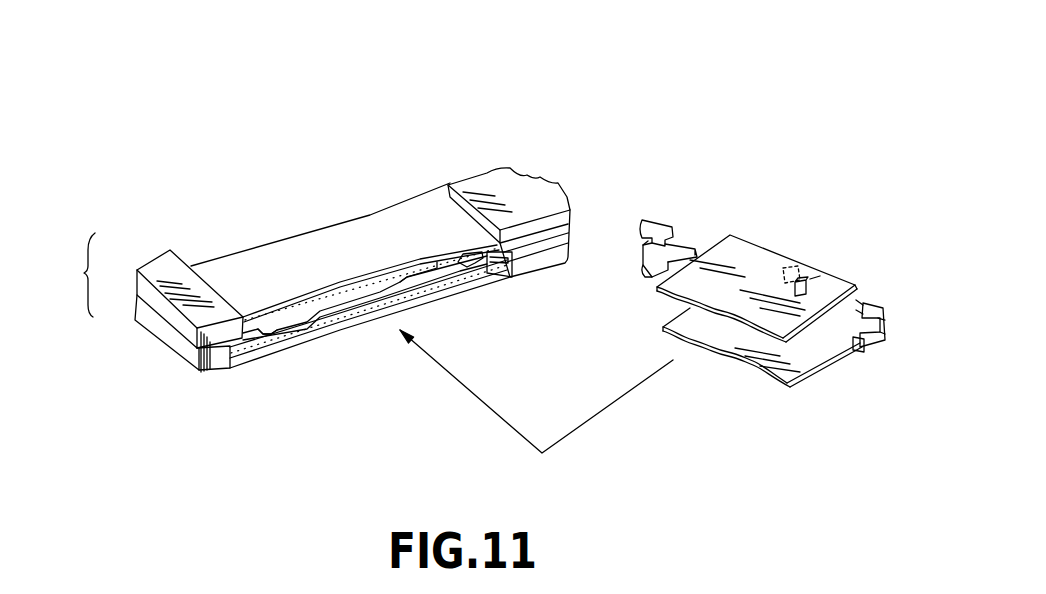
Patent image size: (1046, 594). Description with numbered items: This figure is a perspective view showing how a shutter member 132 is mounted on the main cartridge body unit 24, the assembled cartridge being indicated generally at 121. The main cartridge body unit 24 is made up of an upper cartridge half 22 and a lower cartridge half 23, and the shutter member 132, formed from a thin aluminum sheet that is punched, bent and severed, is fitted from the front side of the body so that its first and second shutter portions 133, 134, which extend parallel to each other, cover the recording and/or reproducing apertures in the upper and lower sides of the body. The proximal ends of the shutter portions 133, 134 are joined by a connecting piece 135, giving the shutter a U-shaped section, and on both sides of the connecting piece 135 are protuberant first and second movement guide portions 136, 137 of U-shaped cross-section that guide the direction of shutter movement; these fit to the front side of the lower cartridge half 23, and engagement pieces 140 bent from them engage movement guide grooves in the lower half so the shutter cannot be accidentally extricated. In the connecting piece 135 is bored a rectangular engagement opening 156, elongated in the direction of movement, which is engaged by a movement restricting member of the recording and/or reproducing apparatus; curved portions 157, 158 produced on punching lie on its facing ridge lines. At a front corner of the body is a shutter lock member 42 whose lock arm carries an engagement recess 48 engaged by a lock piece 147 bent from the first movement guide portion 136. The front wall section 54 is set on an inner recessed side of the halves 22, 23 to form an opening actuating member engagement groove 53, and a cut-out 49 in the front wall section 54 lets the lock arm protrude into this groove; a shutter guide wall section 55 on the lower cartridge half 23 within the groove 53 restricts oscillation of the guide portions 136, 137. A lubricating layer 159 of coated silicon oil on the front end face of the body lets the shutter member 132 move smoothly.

The shutter assembly 121 is at (635, 117).
The main cartridge body unit 24 is at (80, 280).
The upper cartridge half 22 is at (153, 264).
The lower cartridge half 23 is at (142, 303).
The lubricating layer 159 is at (293, 303).
The cut-out 49 is at (436, 262).
The opening actuating member engagement groove 53 is at (533, 247).
The engagement recess 48 is at (467, 263).
The shutter lock member 42 is at (490, 263).
The front wall section 54 is at (350, 311).
The shutter guide wall section 55 is at (283, 318).
The shutter member 132 is at (754, 253).
The first shutter portion 133 is at (682, 287).
The second shutter portion 134 is at (793, 370).
The hook 147 is at (652, 227).
The first movement guide portion 136 is at (684, 242).
The curved portion 157 is at (795, 270).
The engagement opening 156 is at (806, 279).
The curved portion 158 is at (819, 278).
The connecting piece 135 is at (857, 305).
The second movement guide portion 137 is at (884, 328).
The engagement piece 140 is at (858, 350).